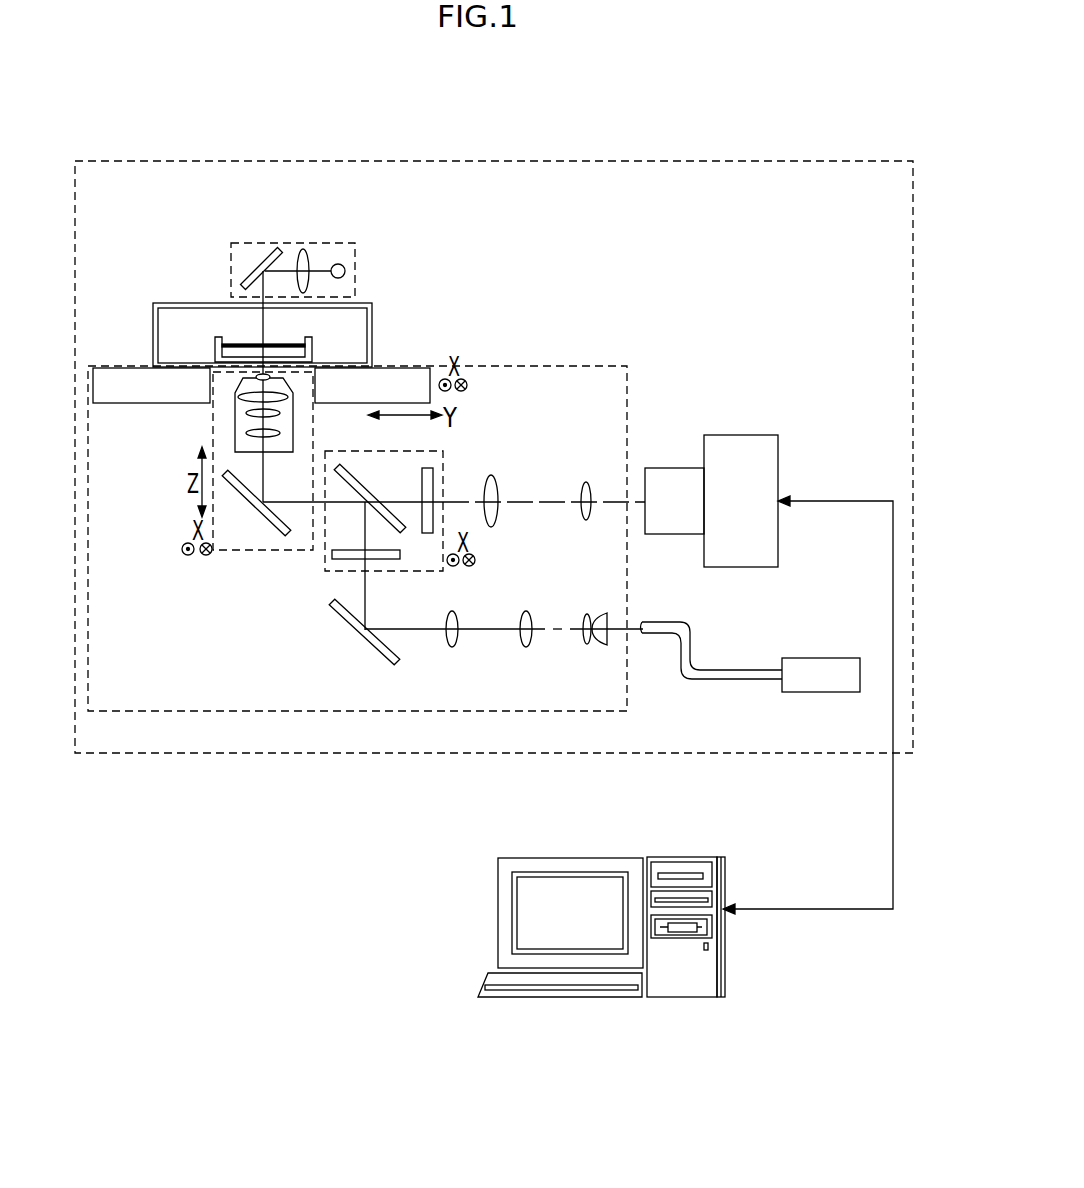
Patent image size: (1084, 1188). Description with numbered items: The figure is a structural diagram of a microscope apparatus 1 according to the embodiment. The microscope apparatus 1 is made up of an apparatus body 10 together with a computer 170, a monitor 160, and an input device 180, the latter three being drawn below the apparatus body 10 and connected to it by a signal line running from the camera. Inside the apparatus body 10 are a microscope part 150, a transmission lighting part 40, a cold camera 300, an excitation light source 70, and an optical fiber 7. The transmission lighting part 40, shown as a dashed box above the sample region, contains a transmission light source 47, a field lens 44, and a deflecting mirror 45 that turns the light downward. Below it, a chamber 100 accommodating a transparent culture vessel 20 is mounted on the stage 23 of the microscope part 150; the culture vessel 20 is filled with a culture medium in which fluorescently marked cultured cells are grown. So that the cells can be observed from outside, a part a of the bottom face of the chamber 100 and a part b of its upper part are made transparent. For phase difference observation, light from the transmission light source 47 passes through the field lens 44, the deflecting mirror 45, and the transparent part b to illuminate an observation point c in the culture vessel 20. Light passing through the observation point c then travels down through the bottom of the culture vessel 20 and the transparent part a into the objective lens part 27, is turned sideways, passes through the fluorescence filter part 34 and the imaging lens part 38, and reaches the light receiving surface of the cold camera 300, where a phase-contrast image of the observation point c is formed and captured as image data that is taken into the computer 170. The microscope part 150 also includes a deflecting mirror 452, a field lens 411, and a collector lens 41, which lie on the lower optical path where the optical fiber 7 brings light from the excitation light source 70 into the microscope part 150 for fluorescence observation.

The microscope apparatus 1 is at (183, 138).
The apparatus body 10 is at (882, 161).
The microscope part 150 is at (596, 366).
The transmission lighting part 40 is at (325, 244).
The deflecting mirror 45 is at (256, 262).
The field lens 44 is at (302, 249).
The transmission light source 47 is at (338, 264).
The chamber 100 is at (162, 303).
The part of bottom face of the chamber a is at (248, 362).
The part of upper part of the chamber b is at (252, 305).
The observation point c is at (270, 339).
The culture vessel 20 is at (316, 335).
The stage 23 is at (118, 405).
The objective lens part 27 is at (247, 552).
The fluorescence filter part 34 is at (447, 466).
The imaging lens part 38 is at (600, 480).
The cold camera 300 is at (706, 400).
The deflecting mirror 452 is at (355, 635).
The field lens 411 is at (443, 608).
The collector lens 41 is at (613, 607).
The optical fiber 7 is at (737, 669).
The excitation light source 70 is at (812, 658).
The monitor 160 is at (498, 916).
The computer 170 is at (727, 972).
The input device 180 is at (487, 983).